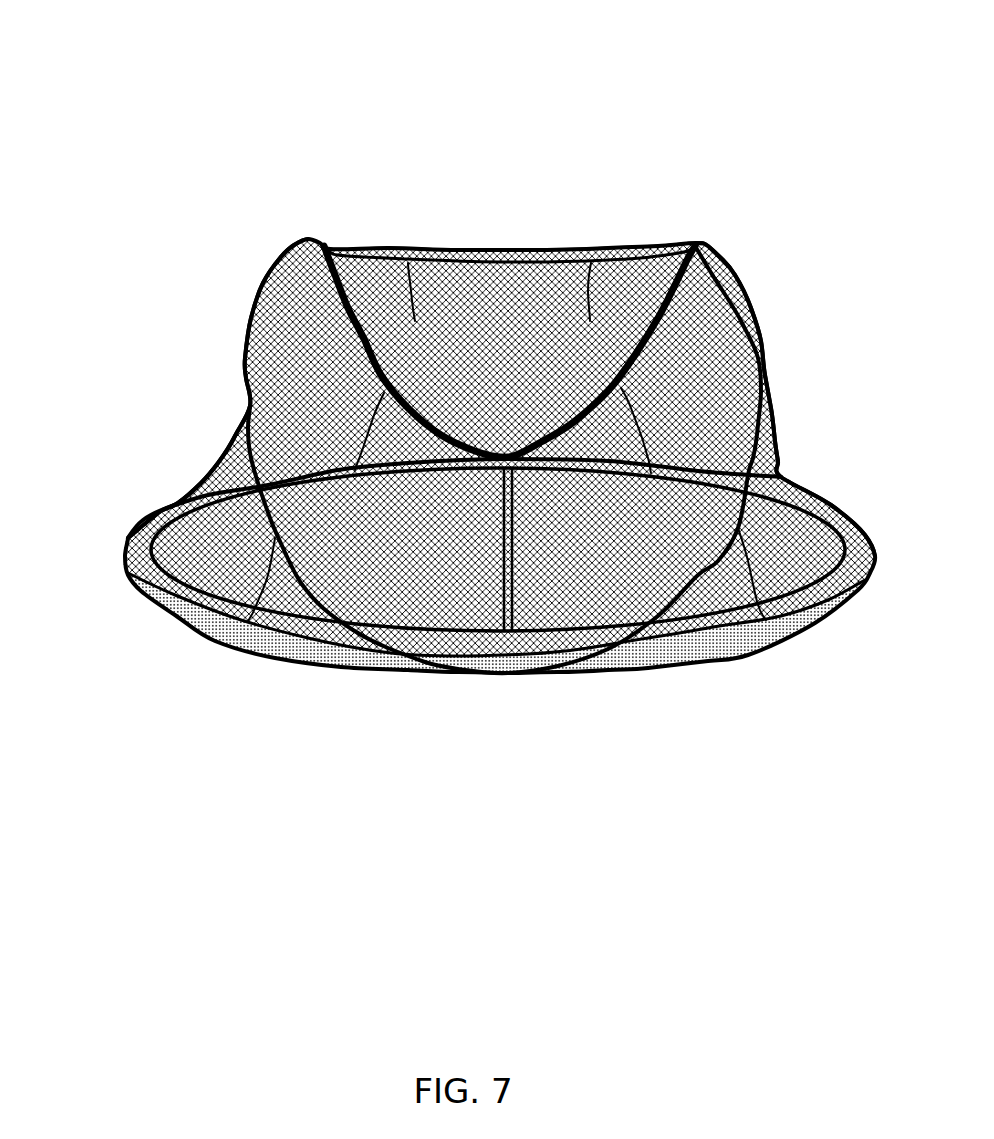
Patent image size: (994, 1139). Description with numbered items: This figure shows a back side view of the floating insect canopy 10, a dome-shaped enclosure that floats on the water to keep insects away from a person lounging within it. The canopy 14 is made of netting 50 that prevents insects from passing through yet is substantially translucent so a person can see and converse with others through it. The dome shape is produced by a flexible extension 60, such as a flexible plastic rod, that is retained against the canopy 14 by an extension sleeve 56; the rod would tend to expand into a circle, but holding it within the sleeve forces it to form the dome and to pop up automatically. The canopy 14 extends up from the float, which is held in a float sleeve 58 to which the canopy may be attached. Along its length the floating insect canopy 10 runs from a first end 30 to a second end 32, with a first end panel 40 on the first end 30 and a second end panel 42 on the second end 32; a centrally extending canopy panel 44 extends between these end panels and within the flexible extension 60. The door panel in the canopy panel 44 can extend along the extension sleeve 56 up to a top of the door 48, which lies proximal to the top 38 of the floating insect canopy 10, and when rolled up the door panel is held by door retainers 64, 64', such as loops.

The floating insect canopy 10 is at (340, 118).
The canopy 14 is at (735, 262).
The first end 30 is at (117, 540).
The second end 32 is at (867, 545).
The top 38 is at (458, 240).
The first end panel 40 is at (230, 448).
The second end panel 42 is at (767, 437).
The canopy panel 44 is at (643, 240).
The top of the door 48 is at (505, 240).
The netting 50 is at (368, 245).
The extension sleeve 56 is at (272, 250).
The float sleeve 58 is at (777, 613).
The flexible extension 60 is at (760, 363).
The door retainers 64 is at (392, 235).
The door retainers 64' is at (551, 237).